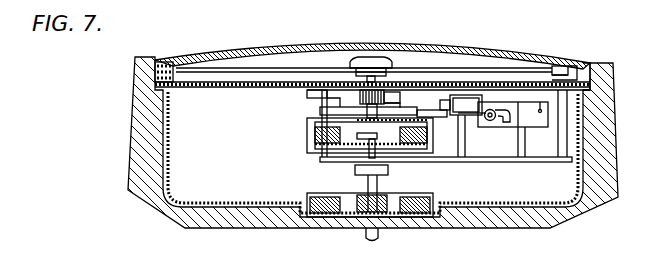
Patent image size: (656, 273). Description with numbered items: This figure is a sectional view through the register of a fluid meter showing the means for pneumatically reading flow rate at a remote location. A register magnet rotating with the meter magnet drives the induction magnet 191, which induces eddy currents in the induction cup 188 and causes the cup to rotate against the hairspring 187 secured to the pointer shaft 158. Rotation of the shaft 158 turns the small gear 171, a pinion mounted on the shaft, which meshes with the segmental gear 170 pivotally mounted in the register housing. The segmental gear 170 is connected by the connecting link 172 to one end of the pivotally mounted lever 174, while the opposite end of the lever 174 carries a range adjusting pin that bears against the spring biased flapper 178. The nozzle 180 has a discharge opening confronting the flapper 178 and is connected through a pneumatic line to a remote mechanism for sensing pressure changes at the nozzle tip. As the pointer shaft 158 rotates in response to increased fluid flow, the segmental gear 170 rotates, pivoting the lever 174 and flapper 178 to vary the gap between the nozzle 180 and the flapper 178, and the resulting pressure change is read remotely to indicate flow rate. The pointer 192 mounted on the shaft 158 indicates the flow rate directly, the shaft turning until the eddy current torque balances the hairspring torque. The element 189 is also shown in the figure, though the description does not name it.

The pointer shaft 158 is at (363, 78).
The connecting link 172 is at (397, 90).
The lever 174 is at (412, 107).
The segmental gear 170 is at (437, 92).
The flapper 178 is at (512, 108).
The nozzle 180 is at (502, 120).
The pointer 192 is at (558, 62).
The small gear 171 is at (320, 100).
The bracket flange 189 is at (318, 109).
The induction cup 188 is at (307, 133).
The induction magnet 191 is at (310, 140).
The hairspring 187 is at (343, 116).